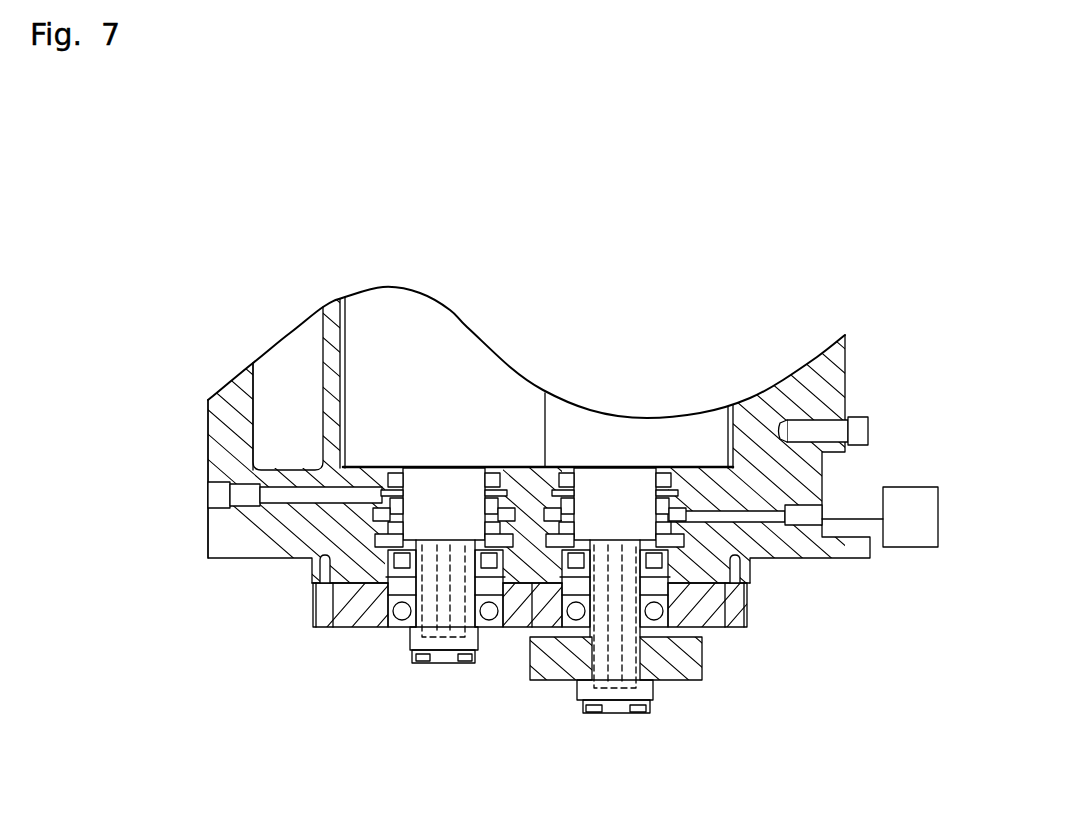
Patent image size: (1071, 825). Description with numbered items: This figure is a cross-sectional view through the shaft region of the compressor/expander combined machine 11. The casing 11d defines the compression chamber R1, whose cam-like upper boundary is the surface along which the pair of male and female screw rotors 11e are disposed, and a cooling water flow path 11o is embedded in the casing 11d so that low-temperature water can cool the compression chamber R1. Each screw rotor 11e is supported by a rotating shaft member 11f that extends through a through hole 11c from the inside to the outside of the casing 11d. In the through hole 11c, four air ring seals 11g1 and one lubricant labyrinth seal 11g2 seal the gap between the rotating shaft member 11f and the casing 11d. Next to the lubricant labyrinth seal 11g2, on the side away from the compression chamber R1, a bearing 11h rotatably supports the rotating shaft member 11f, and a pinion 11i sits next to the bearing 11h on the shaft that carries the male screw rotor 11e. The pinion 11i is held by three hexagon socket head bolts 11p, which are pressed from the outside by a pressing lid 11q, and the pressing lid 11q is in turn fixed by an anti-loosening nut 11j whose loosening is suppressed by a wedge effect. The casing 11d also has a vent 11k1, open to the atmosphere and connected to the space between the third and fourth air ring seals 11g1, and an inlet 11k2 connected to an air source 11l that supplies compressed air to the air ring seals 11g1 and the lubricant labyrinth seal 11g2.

The compressor/expander combined machine 11 is at (720, 309).
The compression chamber R1 is at (375, 309).
The through hole 11c is at (395, 605).
The casing 11d is at (240, 393).
The screw rotor 11e is at (593, 422).
The rotating shaft member 11f is at (398, 600).
The air ring seal 11g1 is at (385, 530).
The lubricant labyrinth seal 11g2 is at (395, 583).
The bearing 11h is at (402, 627).
The pinion 11i is at (703, 655).
The anti-loosening nut 11j is at (420, 655).
The vent 11k1 is at (207, 480).
The inlet 11k2 is at (822, 512).
The air source 11l is at (910, 547).
The cooling water flow path 11o is at (312, 415).
The hexagon socket head bolt 11p is at (403, 653).
The pressing lid 11q is at (458, 663).